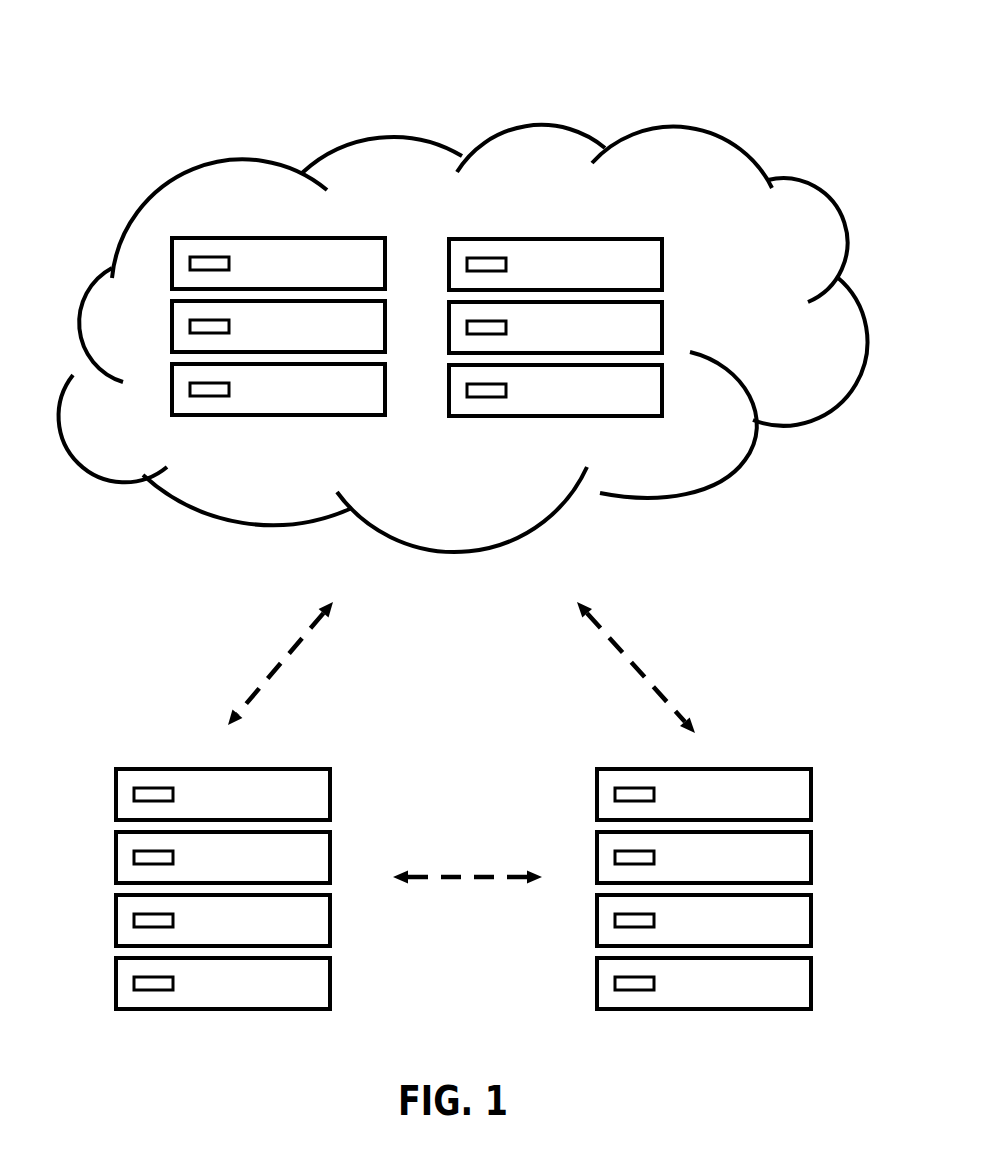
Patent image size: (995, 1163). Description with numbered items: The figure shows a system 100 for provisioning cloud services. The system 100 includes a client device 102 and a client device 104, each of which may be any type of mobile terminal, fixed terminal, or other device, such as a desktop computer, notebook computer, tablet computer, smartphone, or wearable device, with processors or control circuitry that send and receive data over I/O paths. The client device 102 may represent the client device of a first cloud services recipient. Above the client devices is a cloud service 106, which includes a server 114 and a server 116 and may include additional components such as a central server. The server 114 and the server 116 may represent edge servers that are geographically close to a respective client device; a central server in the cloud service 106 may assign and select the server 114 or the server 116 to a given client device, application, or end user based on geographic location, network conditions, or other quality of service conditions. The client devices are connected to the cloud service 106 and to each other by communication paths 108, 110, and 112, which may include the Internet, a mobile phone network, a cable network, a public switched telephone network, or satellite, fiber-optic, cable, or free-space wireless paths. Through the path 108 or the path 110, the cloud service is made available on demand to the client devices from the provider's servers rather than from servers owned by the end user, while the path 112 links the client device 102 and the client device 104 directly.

The system 100 is at (439, 42).
The client device 102 is at (168, 754).
The client device 104 is at (754, 759).
The cloud service 106 is at (566, 111).
The communication path 108 is at (250, 631).
The communication path 110 is at (648, 614).
The communication path 112 is at (450, 853).
The server 114 is at (333, 231).
The server 116 is at (598, 231).